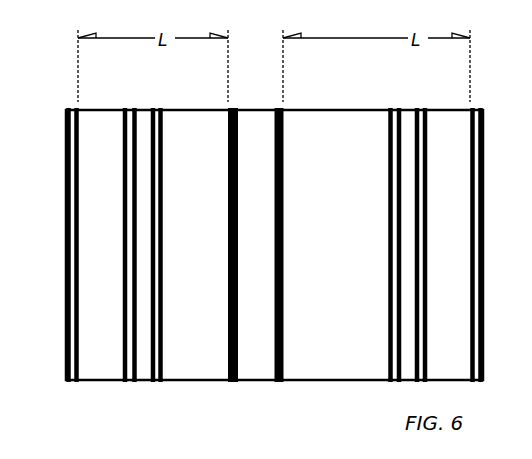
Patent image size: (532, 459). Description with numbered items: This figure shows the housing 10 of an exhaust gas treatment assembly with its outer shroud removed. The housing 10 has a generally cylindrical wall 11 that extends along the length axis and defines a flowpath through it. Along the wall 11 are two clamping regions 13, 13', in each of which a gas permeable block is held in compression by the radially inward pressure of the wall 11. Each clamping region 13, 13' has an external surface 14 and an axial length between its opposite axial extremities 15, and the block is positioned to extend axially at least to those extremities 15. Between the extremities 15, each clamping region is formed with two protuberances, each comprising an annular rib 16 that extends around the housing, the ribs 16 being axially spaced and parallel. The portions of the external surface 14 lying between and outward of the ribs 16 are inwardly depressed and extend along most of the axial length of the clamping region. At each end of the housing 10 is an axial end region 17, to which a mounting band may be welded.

The housing 10 is at (499, 151).
The cylindrical wall 11 is at (182, 382).
The clamping region 13 is at (147, 272).
The clamping region 13' is at (376, 275).
The external surface 14 is at (165, 73).
The axial extremities 15 is at (78, 86).
The annular rib 16 is at (127, 212).
The axial end region 17 is at (66, 321).